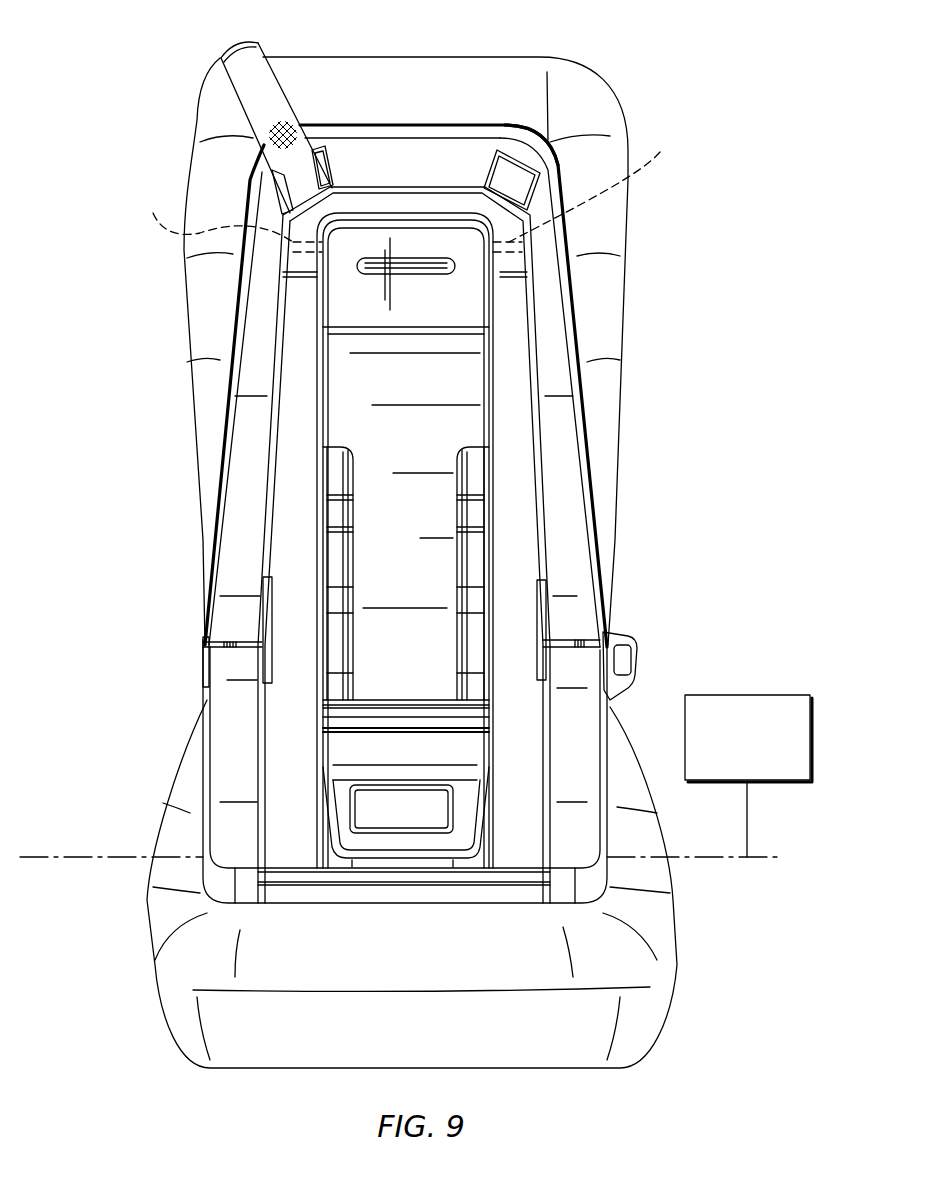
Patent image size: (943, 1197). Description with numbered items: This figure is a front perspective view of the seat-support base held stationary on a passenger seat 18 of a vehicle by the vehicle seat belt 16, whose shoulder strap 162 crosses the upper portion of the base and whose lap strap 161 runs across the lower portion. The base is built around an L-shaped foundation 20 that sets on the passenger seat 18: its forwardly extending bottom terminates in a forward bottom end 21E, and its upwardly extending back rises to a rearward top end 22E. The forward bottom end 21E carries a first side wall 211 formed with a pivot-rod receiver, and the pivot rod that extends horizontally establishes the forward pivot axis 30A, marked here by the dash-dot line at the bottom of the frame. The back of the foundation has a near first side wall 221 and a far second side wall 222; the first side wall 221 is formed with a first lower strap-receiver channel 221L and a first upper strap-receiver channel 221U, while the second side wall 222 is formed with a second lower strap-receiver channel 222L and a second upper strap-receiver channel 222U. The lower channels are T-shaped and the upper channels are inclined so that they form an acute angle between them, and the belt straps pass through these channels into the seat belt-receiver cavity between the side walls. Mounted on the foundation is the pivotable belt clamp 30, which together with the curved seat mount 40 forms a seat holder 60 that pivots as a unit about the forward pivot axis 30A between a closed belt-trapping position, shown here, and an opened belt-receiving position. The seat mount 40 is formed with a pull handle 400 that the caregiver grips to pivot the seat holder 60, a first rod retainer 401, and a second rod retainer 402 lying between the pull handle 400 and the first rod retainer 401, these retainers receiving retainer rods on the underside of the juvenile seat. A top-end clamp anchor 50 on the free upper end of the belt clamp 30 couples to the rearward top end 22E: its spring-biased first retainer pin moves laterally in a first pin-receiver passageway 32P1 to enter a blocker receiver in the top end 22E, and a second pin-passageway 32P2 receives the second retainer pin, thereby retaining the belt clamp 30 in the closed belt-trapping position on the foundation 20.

The vehicle seat belt 16 is at (291, 83).
The shoulder strap 162 is at (240, 97).
The passenger seat 18 is at (160, 777).
The L-shaped foundation 20 is at (592, 404).
The forward bottom end 21E is at (407, 895).
The rearward top end 22E is at (420, 124).
The pivotable belt clamp 30 is at (538, 322).
The forward pivot axis 30A is at (743, 694).
The first pin-receiver passageway 32P1 is at (224, 223).
The second pin-passageway 32P2 is at (583, 200).
The curved seat mount 40 is at (423, 603).
The top-end clamp anchor 50 is at (402, 243).
The seat holder 60 is at (662, 470).
The lap strap 161 is at (203, 650).
The first side wall 211 is at (203, 750).
The near first side wall 221 is at (236, 289).
The first upper strap-receiver channel 221U is at (330, 147).
The first lower strap-receiver channel 221L is at (242, 633).
The far second side wall 222 is at (568, 240).
The second upper strap-receiver channel 222U is at (548, 142).
The second lower strap-receiver channel 222L is at (574, 634).
The pull handle 400 is at (400, 270).
The first rod retainer 401 is at (384, 718).
The second rod retainer 402 is at (350, 513).